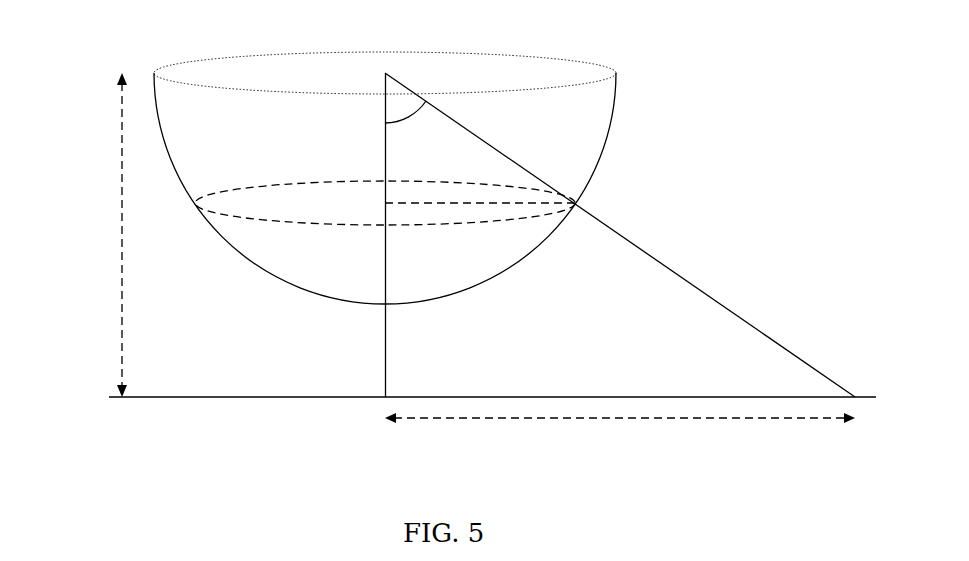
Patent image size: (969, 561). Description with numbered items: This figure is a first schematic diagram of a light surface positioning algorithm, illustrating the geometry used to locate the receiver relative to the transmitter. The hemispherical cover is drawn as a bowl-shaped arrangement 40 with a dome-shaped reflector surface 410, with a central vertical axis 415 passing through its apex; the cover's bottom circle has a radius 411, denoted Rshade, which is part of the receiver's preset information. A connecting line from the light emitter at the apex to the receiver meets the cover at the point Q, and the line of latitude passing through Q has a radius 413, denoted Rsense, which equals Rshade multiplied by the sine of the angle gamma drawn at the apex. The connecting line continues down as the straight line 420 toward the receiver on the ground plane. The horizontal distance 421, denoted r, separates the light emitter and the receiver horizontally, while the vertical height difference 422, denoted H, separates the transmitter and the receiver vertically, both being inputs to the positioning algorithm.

The optical arrangement with bowl-shaped reflector 40 is at (789, 68).
The bowl-shaped reflector surface 410 is at (597, 162).
The radius of the bottom circle of the cover 411 is at (556, 196).
The radius of a circle corresponding to a line of latitude that passes the point Q 413 is at (493, 203).
The central axis / apex 415 is at (388, 75).
The straight line from the polar coordinate center to the receiver 420 is at (857, 396).
The horizontal distance between the light emitter and the receiver 421 is at (747, 418).
The vertical height difference between the transmitter and the receiver 422 is at (122, 196).